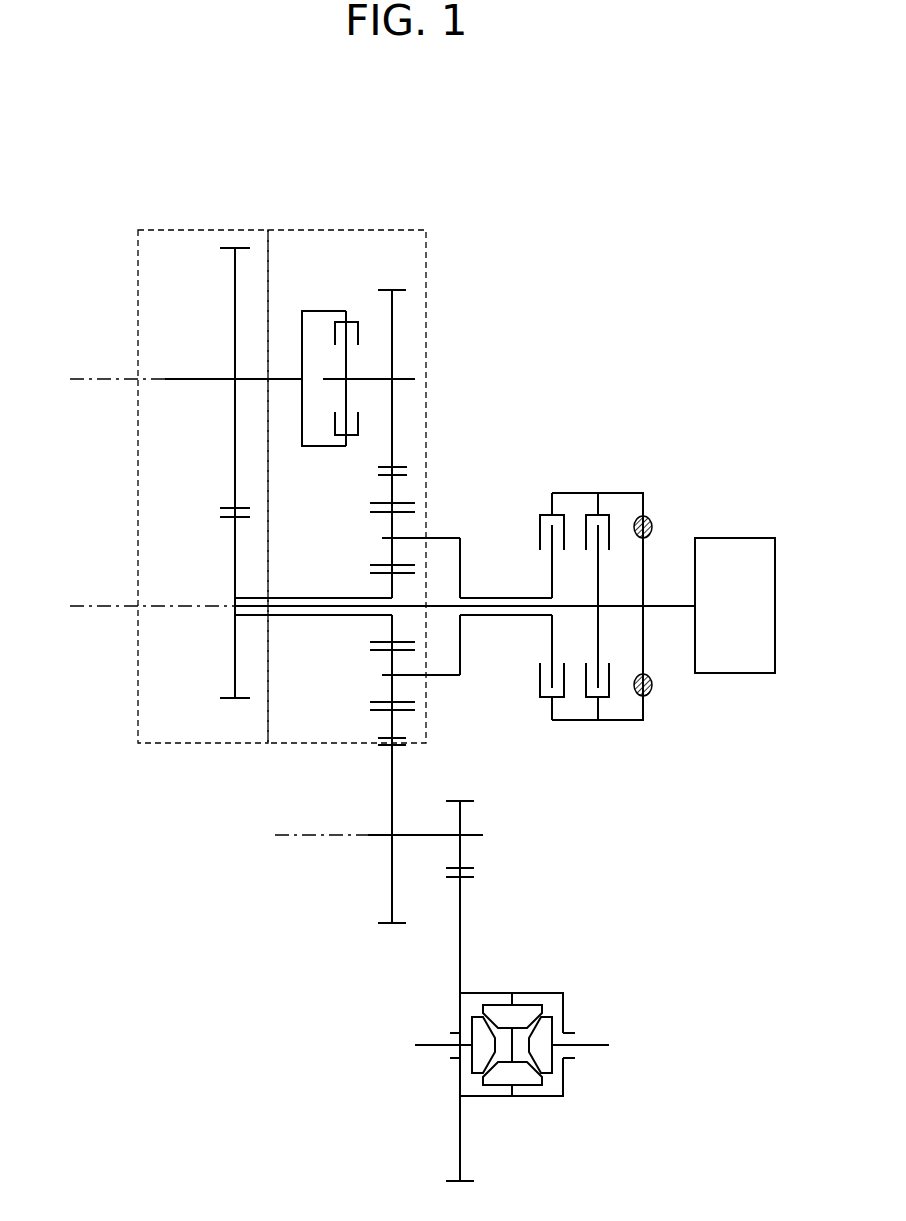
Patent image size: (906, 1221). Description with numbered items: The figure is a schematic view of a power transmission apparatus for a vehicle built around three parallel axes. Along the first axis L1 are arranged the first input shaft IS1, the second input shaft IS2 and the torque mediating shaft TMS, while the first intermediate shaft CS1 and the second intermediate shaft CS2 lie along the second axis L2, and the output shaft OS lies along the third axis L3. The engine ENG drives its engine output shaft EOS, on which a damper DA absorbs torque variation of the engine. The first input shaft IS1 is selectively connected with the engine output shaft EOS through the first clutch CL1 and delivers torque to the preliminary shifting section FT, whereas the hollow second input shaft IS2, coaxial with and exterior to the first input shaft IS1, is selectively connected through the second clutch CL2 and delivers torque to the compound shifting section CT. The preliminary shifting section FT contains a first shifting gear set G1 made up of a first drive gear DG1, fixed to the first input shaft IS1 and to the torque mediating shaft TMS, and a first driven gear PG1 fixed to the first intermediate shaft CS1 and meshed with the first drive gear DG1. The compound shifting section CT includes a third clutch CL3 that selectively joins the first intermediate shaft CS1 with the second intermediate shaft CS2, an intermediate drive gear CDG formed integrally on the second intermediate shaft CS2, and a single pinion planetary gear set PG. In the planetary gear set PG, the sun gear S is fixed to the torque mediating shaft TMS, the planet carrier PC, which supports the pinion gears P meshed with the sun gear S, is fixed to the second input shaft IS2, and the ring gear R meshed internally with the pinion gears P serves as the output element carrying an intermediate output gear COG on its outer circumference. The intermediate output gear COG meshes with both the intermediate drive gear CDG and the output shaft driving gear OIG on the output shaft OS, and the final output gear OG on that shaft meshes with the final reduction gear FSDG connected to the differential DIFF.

The preliminary shifting section FT is at (193, 228).
The compound shifting section CT is at (413, 228).
The third clutch CL3 is at (357, 322).
The first driven gear PG1 is at (233, 280).
The first intermediate shaft CS1 is at (190, 377).
The intermediate drive gear CDG is at (398, 306).
The second intermediate shaft CS2 is at (405, 372).
The second axis L2 is at (103, 379).
The planetary gear set PG is at (410, 497).
The planet carrier PC is at (440, 536).
The intermediate output gear COG is at (378, 472).
The ring gear R is at (372, 503).
The pinion gears P is at (385, 536).
The sun gear S is at (372, 572).
The first drive gear DG1 is at (233, 542).
The first axis L1 is at (138, 607).
The torque mediating shaft TMS is at (298, 617).
The first input shaft IS1 is at (347, 610).
The second input shaft IS2 is at (500, 597).
The second clutch CL2 is at (560, 508).
The first clutch CL1 is at (607, 508).
The damper DA is at (653, 515).
The engine output shaft EOS is at (668, 609).
The engine ENG is at (735, 605).
The first shifting gear set G1 is at (232, 710).
The output shaft driving gear OIG is at (390, 796).
The output shaft OS is at (418, 833).
The final output gear OG is at (463, 812).
The third axis L3 is at (307, 835).
The final reduction gear FSDG is at (462, 927).
The differential DIFF is at (565, 1005).